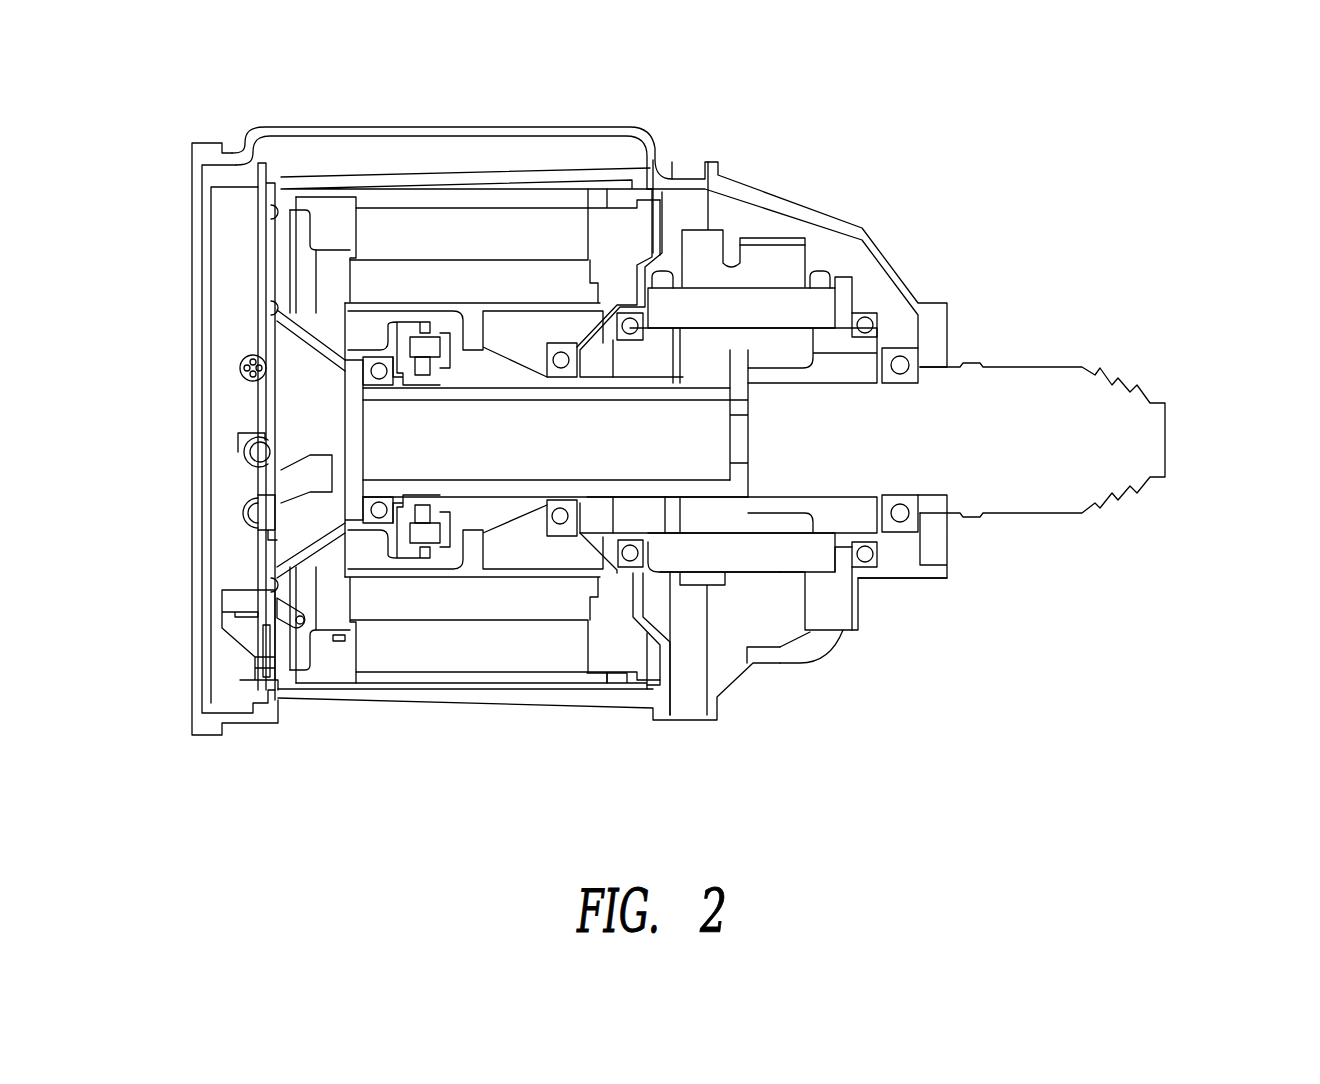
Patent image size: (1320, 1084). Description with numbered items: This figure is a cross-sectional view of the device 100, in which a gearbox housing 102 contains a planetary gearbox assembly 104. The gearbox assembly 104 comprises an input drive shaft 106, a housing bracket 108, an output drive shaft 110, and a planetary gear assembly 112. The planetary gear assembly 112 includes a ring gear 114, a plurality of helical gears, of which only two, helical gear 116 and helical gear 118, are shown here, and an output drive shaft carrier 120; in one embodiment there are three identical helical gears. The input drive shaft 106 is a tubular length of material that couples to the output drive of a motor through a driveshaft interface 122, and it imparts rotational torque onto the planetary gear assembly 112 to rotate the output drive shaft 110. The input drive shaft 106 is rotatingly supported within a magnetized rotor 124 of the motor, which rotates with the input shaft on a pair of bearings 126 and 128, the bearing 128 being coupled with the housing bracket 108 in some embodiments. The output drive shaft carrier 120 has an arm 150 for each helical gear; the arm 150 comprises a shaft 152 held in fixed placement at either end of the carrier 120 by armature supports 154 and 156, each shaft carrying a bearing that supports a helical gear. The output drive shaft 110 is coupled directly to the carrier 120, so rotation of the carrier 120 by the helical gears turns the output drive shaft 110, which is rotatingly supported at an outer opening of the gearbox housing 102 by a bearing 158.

The device 100 is at (1195, 192).
The gearbox housing 102 is at (685, 163).
The planetary gearbox assembly 104 is at (975, 295).
The input drive shaft 106 is at (380, 466).
The housing bracket 108 is at (597, 350).
The output drive shaft 110 is at (1078, 430).
The planetary gear assembly 112 is at (836, 612).
The ring gear 114 is at (792, 240).
The helical gear 116 is at (707, 245).
The helical gear 118 is at (717, 580).
The output drive shaft carrier 120 is at (857, 527).
The driveshaft interface 122 is at (290, 350).
The magnetized rotor 124 is at (392, 275).
The bearing 126 is at (379, 518).
The bearing 128 is at (628, 555).
The arm 150 is at (813, 298).
The shaft 152 is at (766, 318).
The armature support 154 is at (662, 273).
The armature support 156 is at (827, 263).
The bearing 158 is at (900, 365).